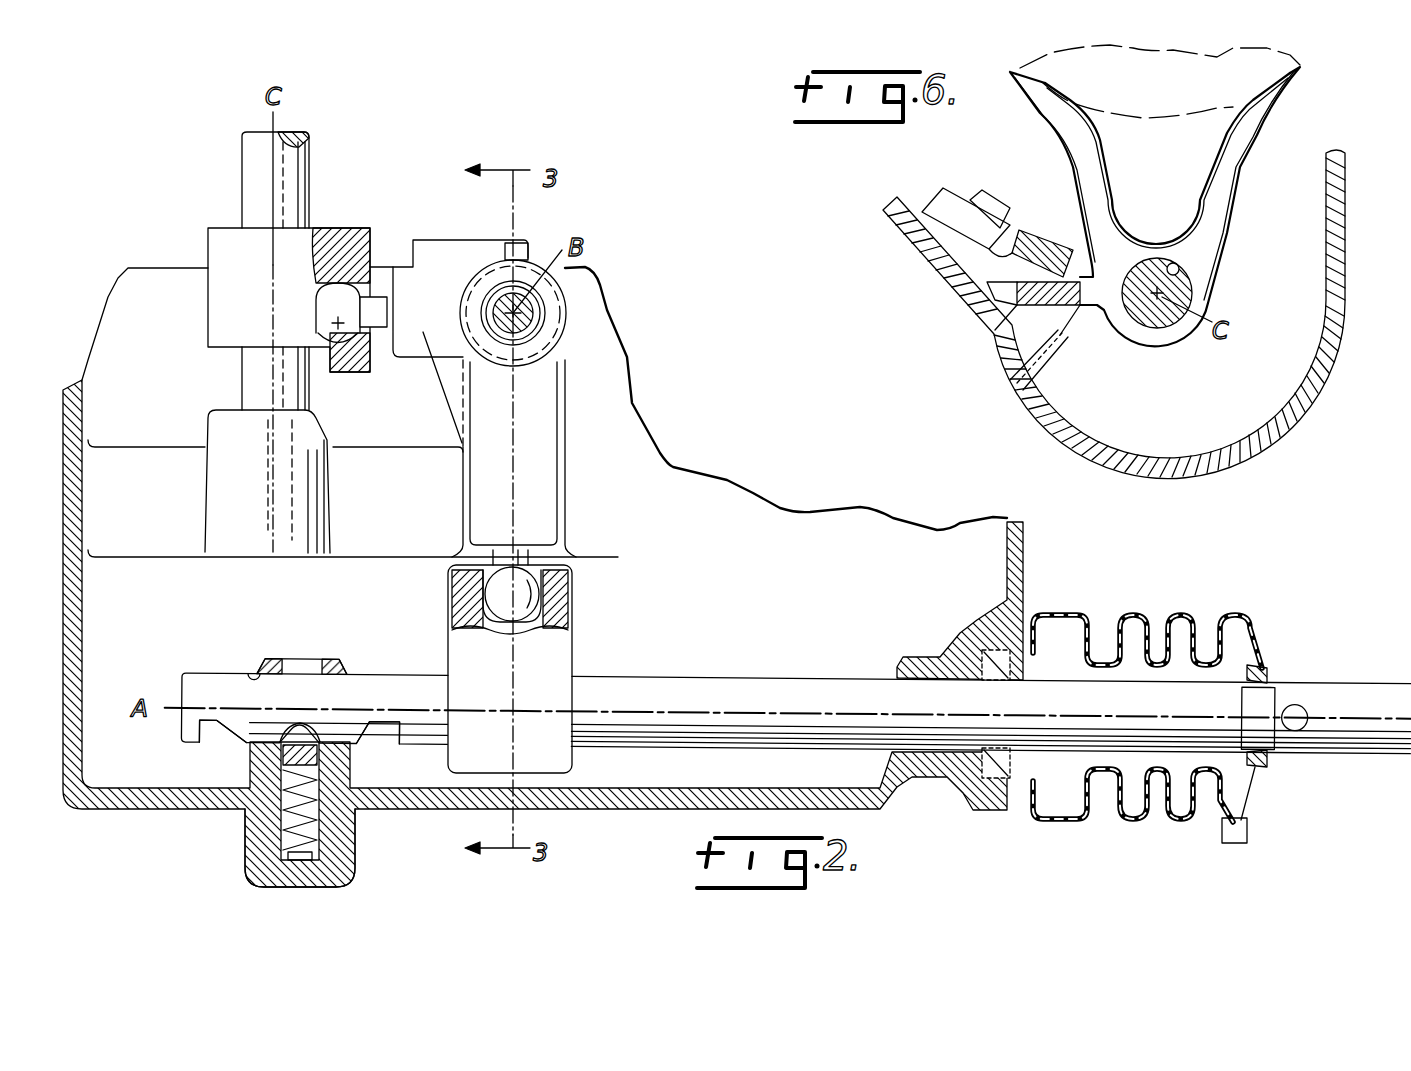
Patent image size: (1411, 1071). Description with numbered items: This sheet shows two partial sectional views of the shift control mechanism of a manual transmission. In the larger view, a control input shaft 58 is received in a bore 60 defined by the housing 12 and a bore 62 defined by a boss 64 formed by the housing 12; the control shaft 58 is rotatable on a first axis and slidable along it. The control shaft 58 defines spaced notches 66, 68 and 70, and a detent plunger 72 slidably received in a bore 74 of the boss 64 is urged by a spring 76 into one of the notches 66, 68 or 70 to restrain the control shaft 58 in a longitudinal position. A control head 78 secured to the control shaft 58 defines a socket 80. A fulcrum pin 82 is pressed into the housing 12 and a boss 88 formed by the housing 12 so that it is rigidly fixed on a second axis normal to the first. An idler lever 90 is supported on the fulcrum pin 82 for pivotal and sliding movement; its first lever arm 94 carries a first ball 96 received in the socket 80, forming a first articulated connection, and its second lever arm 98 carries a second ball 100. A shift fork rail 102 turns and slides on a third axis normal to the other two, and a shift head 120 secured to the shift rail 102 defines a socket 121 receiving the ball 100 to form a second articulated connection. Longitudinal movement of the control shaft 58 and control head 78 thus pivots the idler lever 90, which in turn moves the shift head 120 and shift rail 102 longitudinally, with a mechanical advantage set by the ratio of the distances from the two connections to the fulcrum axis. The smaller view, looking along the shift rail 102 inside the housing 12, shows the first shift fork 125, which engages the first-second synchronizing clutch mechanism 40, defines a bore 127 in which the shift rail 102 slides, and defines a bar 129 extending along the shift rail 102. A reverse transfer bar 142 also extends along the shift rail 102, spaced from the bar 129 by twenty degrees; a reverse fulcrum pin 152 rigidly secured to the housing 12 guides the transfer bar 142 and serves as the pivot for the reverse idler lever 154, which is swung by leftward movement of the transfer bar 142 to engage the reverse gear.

In FIG. 2, the housing 12 is at (680, 805).
In FIG. 6, the housing 12 is at (1300, 407).
In FIG. 6, the first-second synchronizing clutch mechanism 40 is at (1203, 115).
In FIG. 2, the control input shaft 58 is at (775, 745).
In FIG. 2, the bore 60 is at (885, 676).
In FIG. 2, the bore 62 is at (253, 672).
In FIG. 2, the boss 64 is at (347, 663).
In FIG. 2, the notch 66 is at (390, 728).
In FIG. 2, the notch 68 is at (302, 726).
In FIG. 2, the notch 70 is at (213, 730).
In FIG. 2, the detent plunger 72 is at (308, 747).
In FIG. 2, the bore 74 is at (320, 853).
In FIG. 2, the spring 76 is at (282, 848).
In FIG. 2, the control head 78 is at (557, 665).
In FIG. 2, the socket 80 is at (488, 625).
In FIG. 2, the fulcrum pin 82 is at (530, 317).
In FIG. 2, the boss 88 is at (565, 452).
In FIG. 2, the idler lever 90 is at (543, 407).
In FIG. 2, the first lever arm 94 is at (547, 517).
In FIG. 2, the first ball 96 is at (533, 590).
In FIG. 2, the second lever arm 98 is at (423, 332).
In FIG. 2, the second ball 100 is at (323, 355).
In FIG. 2, the shift fork rail 102 is at (300, 183).
In FIG. 6, the shift fork rail 102 is at (1185, 293).
In FIG. 2, the shift head 120 is at (208, 242).
In FIG. 2, the socket 121 is at (313, 333).
In FIG. 6, the first shift fork 125 is at (1237, 173).
In FIG. 6, the bore 127 is at (1178, 272).
In FIG. 6, the bar 129 is at (1063, 310).
In FIG. 6, the reverse transfer bar 142 is at (1070, 218).
In FIG. 6, the reverse fulcrum pin 152 is at (1012, 172).
In FIG. 6, the reverse idler lever 154 is at (922, 225).